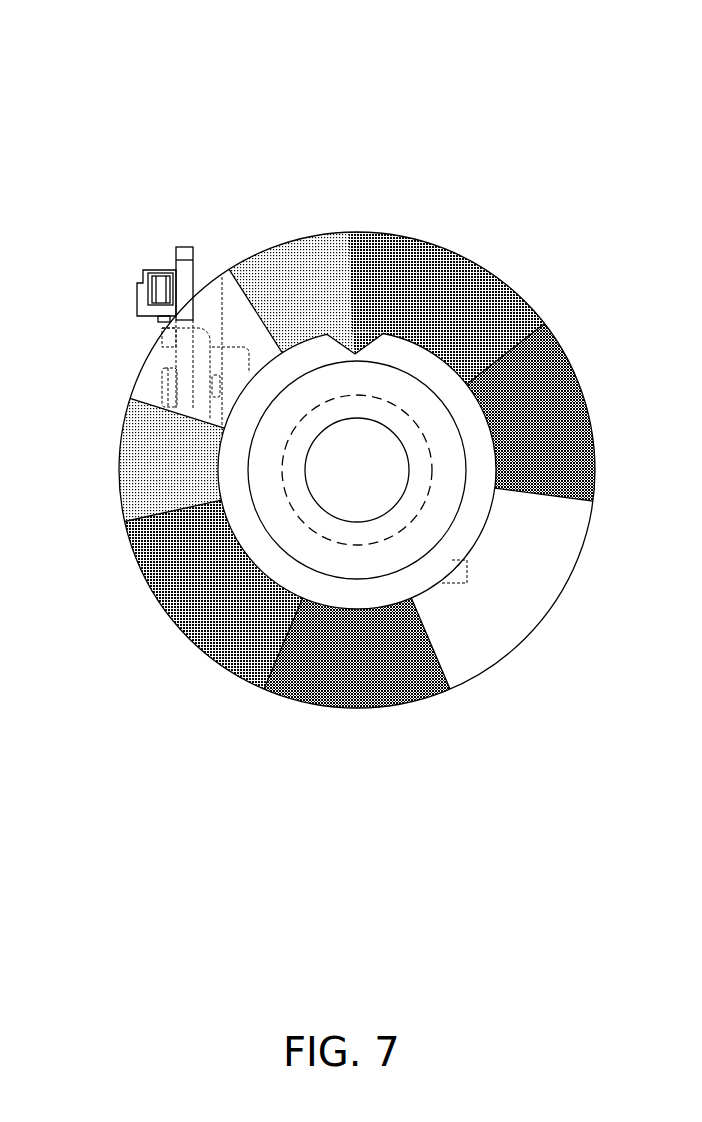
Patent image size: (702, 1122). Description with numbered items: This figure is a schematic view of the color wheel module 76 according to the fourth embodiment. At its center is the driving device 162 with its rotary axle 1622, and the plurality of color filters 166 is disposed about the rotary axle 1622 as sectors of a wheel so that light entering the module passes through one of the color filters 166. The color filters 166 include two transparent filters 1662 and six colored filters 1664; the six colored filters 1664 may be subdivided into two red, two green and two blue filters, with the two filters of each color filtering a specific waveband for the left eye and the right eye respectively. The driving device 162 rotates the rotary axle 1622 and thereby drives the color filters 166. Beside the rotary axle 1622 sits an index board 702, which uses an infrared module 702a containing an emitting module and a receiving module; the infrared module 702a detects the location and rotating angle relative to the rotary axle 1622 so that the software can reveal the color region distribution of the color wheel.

The color wheel module 76 is at (118, 34).
The color filters 166 is at (407, 128).
The transparent filters 1662 is at (213, 290).
The colored filters 1664 is at (478, 263).
The index board 702 is at (143, 293).
The infrared module 702a is at (215, 387).
The driving device 162 is at (282, 452).
The rotary axle 1622 is at (307, 490).